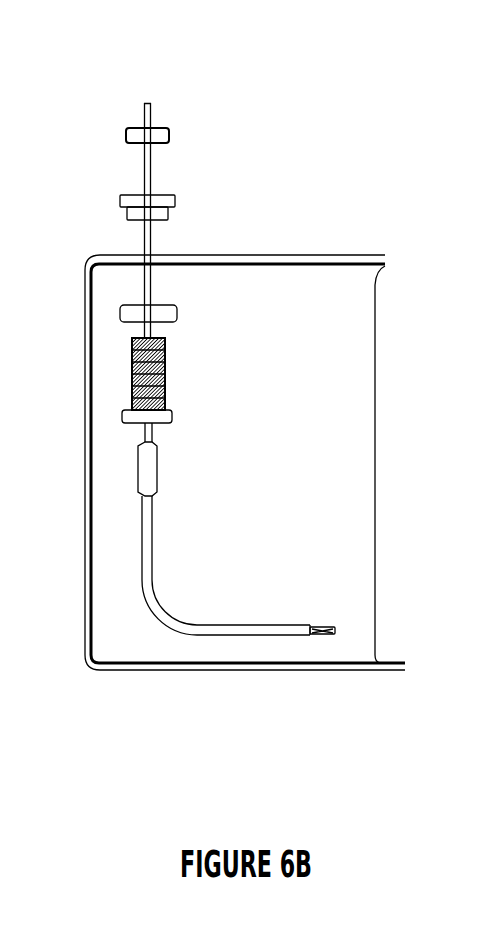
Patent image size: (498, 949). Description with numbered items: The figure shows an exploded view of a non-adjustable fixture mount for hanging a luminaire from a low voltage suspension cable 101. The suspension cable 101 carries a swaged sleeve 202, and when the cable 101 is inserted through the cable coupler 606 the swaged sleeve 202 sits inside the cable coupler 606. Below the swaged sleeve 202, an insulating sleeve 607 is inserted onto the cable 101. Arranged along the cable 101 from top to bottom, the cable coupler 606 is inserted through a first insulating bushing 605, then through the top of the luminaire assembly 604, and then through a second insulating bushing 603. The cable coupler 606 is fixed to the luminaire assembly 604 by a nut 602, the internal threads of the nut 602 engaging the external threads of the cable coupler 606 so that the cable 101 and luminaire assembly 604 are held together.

The low voltage suspension cable 101 is at (152, 162).
The nut 602 is at (126, 131).
The insulating bushing 603 is at (120, 198).
The luminaire assembly 604 is at (304, 256).
The insulating bushing 605 is at (180, 309).
The cable coupler 606 is at (168, 378).
The swaged sleeve 202 is at (158, 452).
The insulating sleeve 607 is at (255, 628).